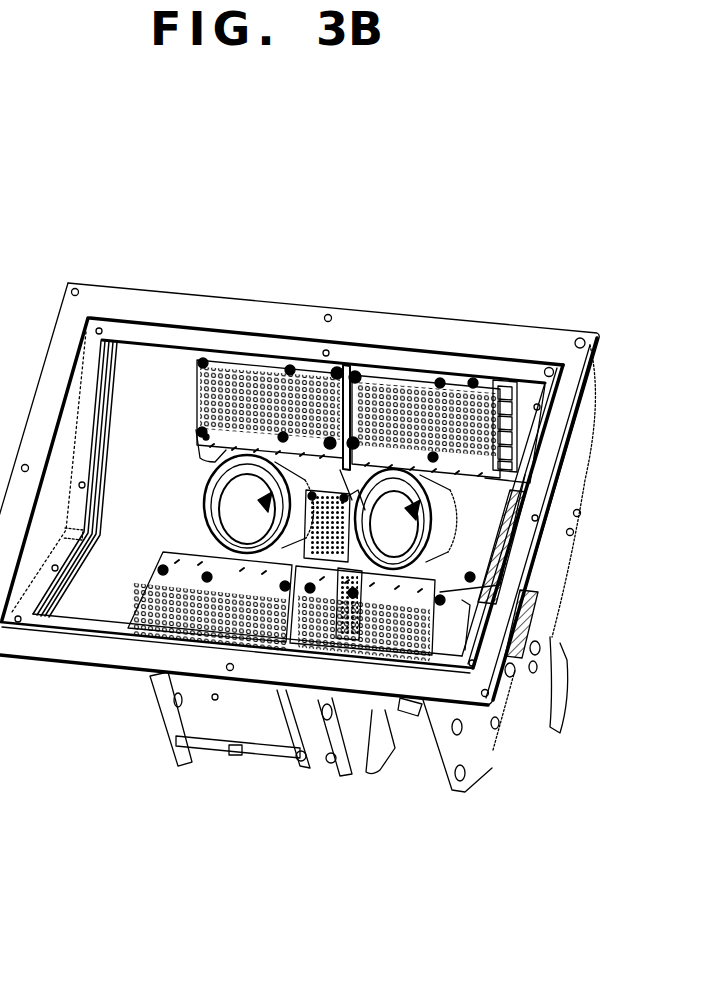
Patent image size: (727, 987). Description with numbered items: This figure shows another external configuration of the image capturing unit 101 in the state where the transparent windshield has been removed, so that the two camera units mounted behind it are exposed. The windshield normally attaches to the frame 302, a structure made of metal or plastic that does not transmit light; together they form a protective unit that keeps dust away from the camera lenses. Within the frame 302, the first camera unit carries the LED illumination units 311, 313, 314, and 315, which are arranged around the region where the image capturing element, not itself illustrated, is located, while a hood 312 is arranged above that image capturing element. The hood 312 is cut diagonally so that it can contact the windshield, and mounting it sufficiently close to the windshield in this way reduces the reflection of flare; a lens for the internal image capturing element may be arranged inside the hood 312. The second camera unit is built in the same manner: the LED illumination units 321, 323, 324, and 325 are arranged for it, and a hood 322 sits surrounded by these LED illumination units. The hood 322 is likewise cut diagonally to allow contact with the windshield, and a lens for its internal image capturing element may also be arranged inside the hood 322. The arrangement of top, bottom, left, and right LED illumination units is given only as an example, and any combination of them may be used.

The image capturing unit 101 is at (406, 250).
The frame 302 is at (185, 300).
The LED illumination unit 311 is at (400, 388).
The hood 312 is at (515, 497).
The LED illumination unit 313 is at (503, 560).
The LED illumination unit 314 is at (355, 567).
The LED illumination unit 315 is at (352, 645).
The LED illumination unit 321 is at (250, 380).
The hood 322 is at (215, 462).
The LED illumination unit 323 is at (308, 540).
The LED illumination unit 324 is at (208, 535).
The LED illumination unit 325 is at (172, 625).